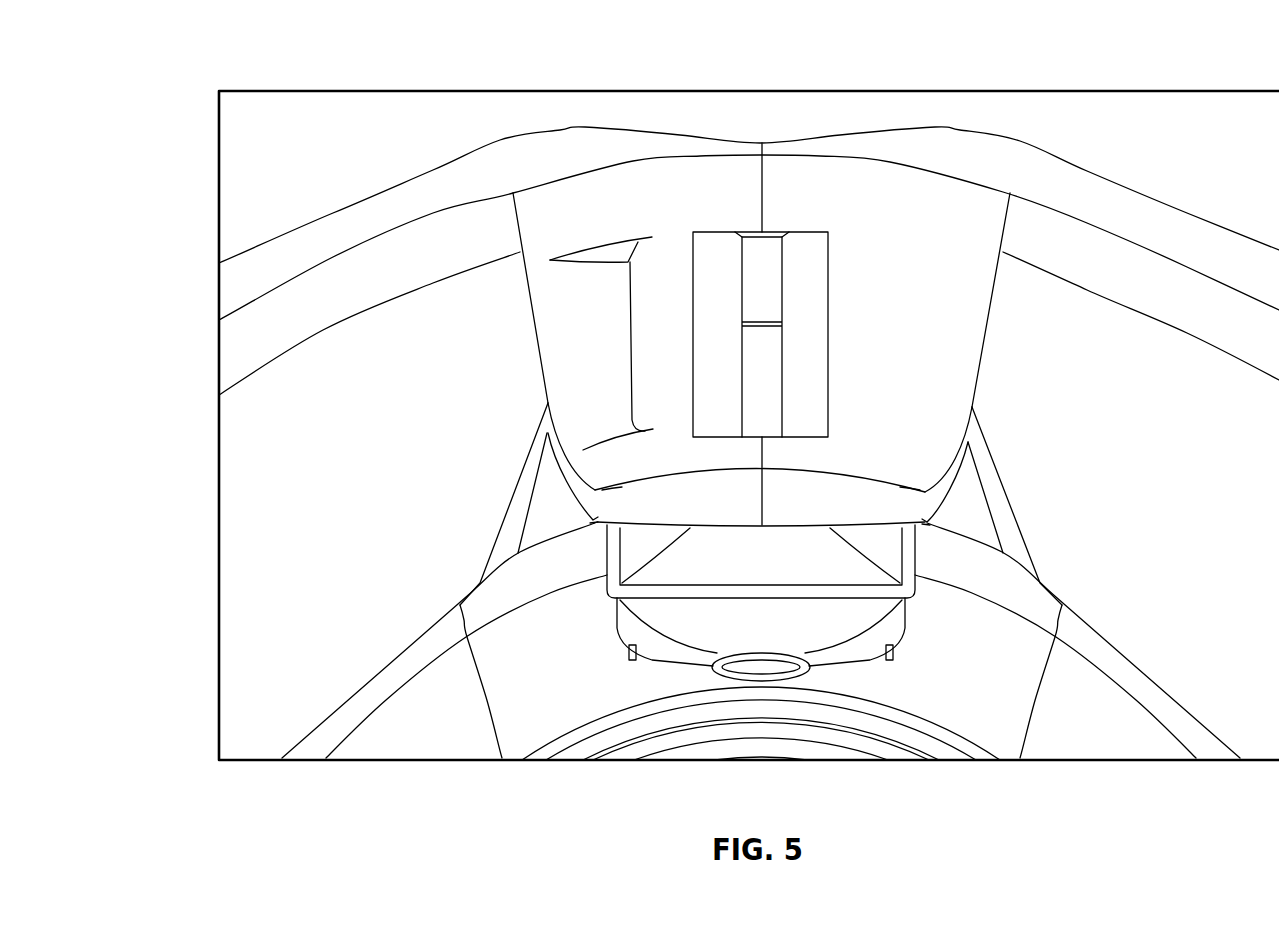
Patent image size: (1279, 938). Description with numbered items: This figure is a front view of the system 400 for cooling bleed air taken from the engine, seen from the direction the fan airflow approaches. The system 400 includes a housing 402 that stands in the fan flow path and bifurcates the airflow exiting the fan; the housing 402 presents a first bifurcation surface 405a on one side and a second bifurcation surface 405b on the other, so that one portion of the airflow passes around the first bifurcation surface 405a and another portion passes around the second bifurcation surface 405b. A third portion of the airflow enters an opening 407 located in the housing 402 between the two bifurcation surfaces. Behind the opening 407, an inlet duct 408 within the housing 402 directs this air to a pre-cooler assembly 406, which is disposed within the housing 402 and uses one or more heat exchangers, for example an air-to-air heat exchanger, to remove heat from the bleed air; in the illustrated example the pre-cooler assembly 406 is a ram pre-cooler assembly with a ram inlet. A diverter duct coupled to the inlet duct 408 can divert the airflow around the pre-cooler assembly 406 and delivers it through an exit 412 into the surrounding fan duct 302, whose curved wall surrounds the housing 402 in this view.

The fan duct 302 is at (343, 603).
The system for cooling bleed air 400 is at (311, 154).
The housing 402 is at (1024, 341).
The first bifurcation surface 405a is at (938, 215).
The second bifurcation surface 405b is at (618, 215).
The pre-cooler assembly 406 is at (848, 617).
The opening 407 is at (755, 367).
The inlet duct 408 is at (752, 288).
The exit 412 is at (591, 332).